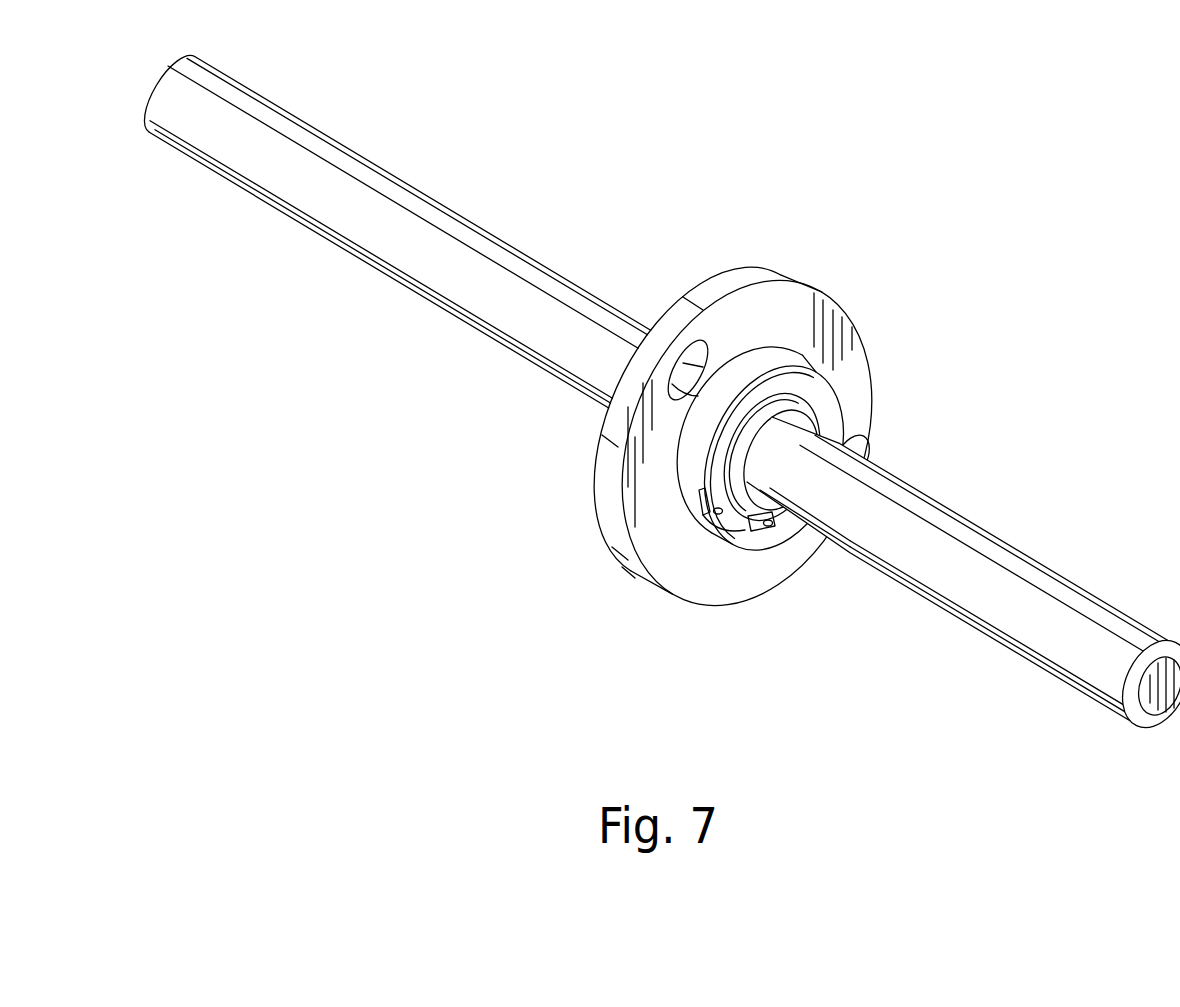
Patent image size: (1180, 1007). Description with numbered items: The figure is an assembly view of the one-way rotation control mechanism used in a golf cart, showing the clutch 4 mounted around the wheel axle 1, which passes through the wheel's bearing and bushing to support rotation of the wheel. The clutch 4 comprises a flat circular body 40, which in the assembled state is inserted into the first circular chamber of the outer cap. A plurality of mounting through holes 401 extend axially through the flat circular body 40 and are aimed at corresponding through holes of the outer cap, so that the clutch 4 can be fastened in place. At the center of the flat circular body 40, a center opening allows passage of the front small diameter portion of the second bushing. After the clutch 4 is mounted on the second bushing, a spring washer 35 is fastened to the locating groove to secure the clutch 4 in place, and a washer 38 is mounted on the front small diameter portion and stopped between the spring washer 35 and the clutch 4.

The wheel axle 1 is at (438, 162).
The clutch 4 is at (811, 435).
The flat circular body 40 is at (833, 300).
The mounting through holes 401 is at (687, 362).
The washer 38 is at (836, 399).
The spring washer 35 is at (768, 530).